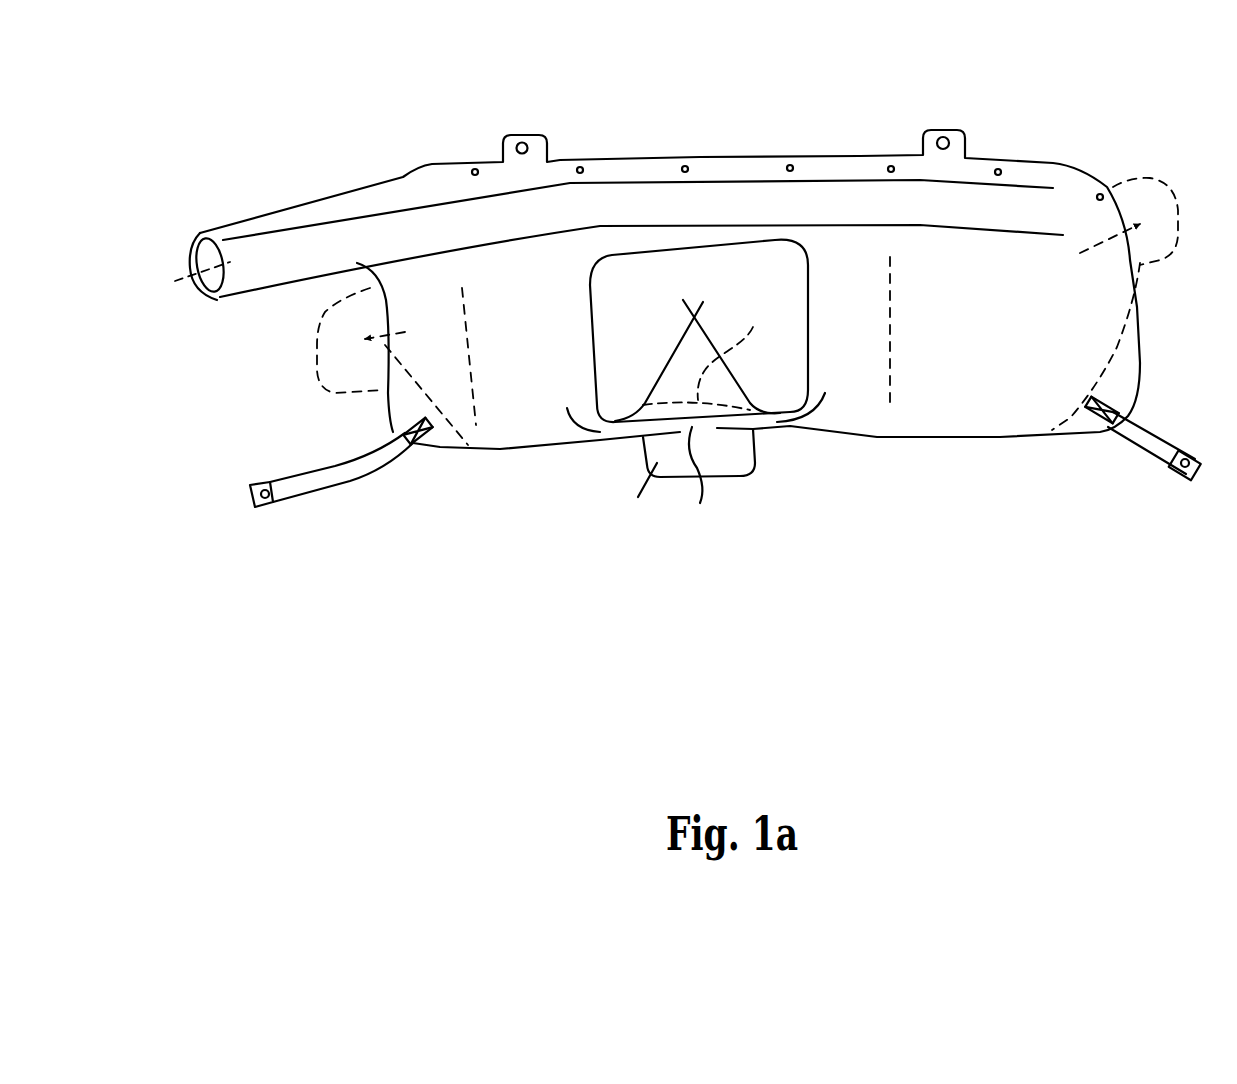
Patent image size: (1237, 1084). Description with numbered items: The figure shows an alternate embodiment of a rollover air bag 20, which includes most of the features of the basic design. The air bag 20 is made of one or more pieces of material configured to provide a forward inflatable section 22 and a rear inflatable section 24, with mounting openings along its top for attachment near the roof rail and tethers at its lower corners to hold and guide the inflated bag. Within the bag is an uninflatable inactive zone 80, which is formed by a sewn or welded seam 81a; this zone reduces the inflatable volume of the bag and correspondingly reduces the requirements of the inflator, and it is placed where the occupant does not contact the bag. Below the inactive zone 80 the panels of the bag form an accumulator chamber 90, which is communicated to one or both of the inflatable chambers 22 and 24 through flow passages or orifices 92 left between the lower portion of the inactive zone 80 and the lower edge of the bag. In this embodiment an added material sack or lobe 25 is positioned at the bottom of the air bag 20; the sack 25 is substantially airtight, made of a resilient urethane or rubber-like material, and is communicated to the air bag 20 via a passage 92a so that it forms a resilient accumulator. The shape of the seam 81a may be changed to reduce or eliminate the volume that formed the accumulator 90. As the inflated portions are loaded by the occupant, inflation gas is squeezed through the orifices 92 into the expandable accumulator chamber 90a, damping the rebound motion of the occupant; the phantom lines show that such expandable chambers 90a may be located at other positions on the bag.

The rollover air bag 20 is at (636, 139).
The forward inflatable section 22 is at (965, 340).
The rear inflatable section 24 is at (478, 345).
The material sack 25 is at (752, 486).
The inactive zone 80 is at (603, 295).
The seam 81a is at (711, 351).
The accumulator chamber 90 is at (308, 338).
The expandable accumulator chamber 90a is at (1136, 178).
The flow passage 92 is at (692, 393).
The passage 92a is at (707, 484).